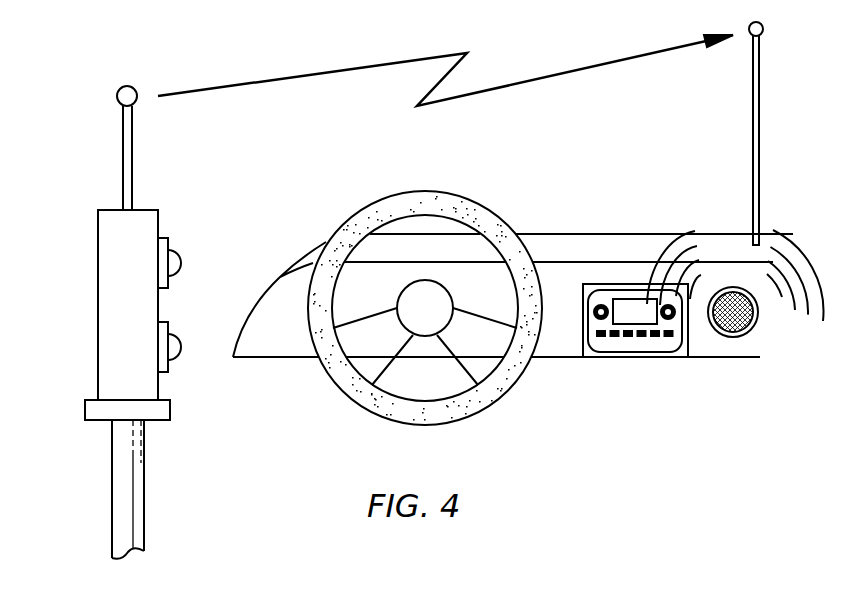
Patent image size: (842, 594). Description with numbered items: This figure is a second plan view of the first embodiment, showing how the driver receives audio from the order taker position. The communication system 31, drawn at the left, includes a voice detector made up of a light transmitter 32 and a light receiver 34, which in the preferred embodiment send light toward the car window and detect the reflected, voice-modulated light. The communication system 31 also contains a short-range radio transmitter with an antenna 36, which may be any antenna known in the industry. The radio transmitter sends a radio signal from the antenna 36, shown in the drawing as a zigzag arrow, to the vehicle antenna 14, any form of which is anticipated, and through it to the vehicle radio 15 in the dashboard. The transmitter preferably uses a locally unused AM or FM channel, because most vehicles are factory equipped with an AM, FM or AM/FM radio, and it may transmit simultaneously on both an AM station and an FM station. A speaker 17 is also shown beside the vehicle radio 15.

The vehicle antenna 14 is at (752, 107).
The vehicle radio 15 is at (632, 343).
The speaker 17 is at (757, 322).
The communication system 31 is at (117, 322).
The light transmitter 32 is at (173, 268).
The light receiver 34 is at (178, 358).
The antenna 36 is at (133, 142).